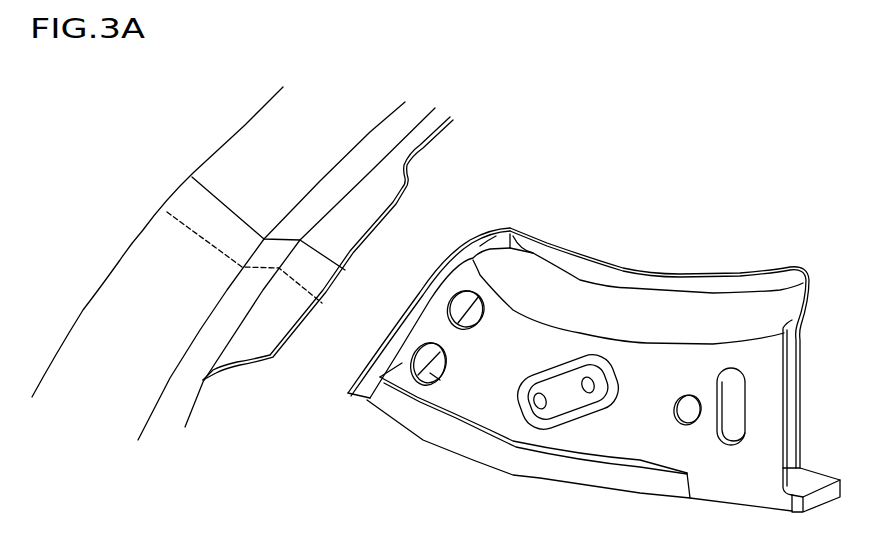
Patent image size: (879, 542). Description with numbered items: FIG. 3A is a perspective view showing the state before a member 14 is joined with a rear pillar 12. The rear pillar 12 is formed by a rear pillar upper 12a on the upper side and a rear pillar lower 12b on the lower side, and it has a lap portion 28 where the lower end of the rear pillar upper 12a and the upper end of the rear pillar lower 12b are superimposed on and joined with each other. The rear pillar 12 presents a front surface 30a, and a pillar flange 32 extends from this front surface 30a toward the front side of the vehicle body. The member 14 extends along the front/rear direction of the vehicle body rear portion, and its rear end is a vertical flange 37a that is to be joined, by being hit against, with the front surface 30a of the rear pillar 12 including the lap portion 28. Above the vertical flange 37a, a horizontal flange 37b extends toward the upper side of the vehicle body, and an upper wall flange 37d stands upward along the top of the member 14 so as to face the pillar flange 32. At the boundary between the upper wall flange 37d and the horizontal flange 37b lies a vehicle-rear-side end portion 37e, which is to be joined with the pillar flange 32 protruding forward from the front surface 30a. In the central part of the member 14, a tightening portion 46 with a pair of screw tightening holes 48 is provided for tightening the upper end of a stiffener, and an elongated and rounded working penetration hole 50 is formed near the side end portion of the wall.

The rear pillar 12 is at (99, 264).
The rear pillar upper 12a is at (268, 136).
The rear pillar lower 12b is at (120, 334).
The member 14 is at (694, 252).
The lap portion 28 is at (197, 211).
The front surface 30a is at (398, 127).
The pillar flange 32 is at (353, 213).
The vertical flange 37a is at (397, 327).
The horizontal flange 37b is at (482, 247).
The upper wall flange 37d is at (637, 282).
The vehicle-rear-side end portion 37e is at (530, 249).
The tightening portion 46 is at (534, 403).
The screw tightening holes 48 is at (587, 393).
The working penetration hole 50 is at (745, 409).